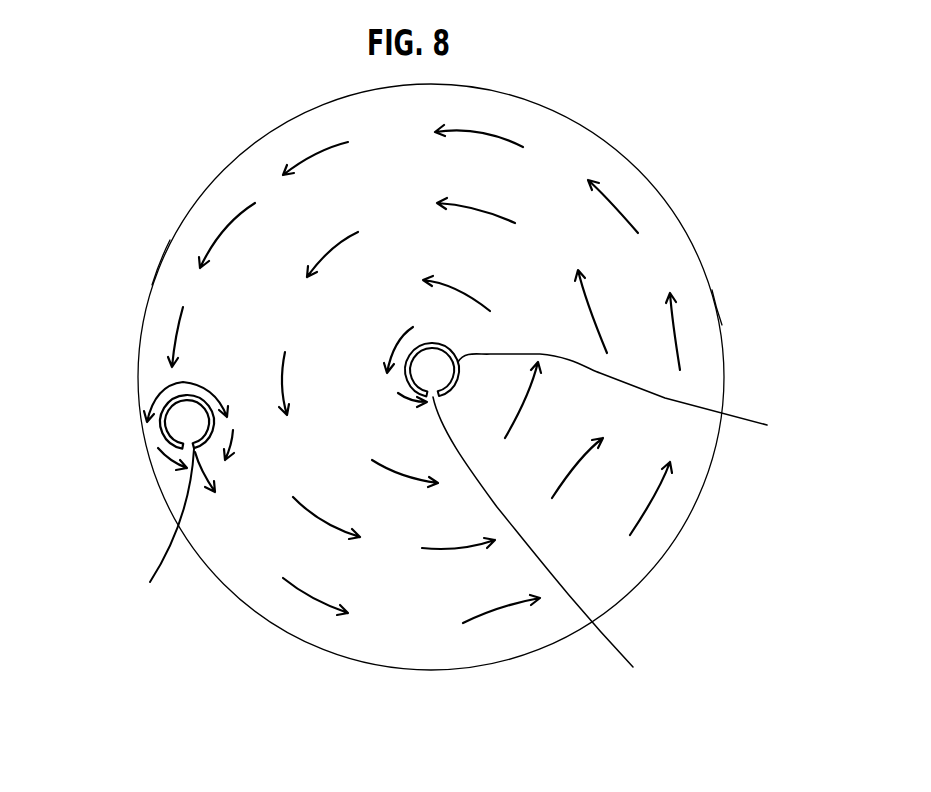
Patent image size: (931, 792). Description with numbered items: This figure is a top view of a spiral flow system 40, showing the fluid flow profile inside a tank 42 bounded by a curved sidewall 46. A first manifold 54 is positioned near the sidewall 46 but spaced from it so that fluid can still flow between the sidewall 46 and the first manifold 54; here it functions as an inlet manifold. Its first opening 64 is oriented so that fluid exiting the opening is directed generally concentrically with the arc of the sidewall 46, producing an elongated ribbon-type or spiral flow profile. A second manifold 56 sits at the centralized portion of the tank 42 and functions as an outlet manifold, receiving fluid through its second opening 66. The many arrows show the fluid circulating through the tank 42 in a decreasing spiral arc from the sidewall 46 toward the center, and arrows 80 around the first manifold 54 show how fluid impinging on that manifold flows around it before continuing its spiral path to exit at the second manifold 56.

The fluid flow system 40 is at (695, 173).
The tank 42 is at (152, 285).
The sidewall 46 is at (722, 325).
The first manifold 54 is at (160, 430).
The second manifold 56 is at (602, 395).
The first opening 64 is at (160, 532).
The second opening 66 is at (548, 542).
The arrows 80 is at (157, 400).